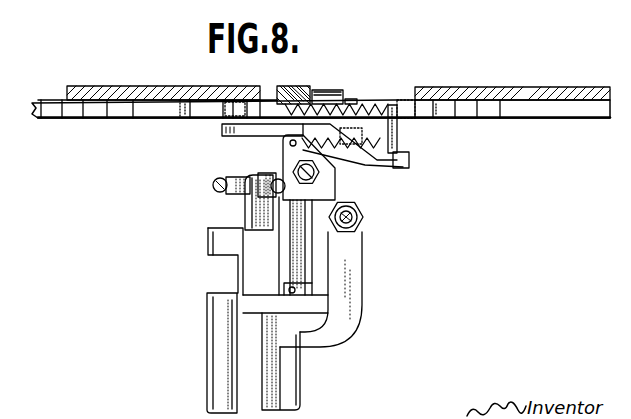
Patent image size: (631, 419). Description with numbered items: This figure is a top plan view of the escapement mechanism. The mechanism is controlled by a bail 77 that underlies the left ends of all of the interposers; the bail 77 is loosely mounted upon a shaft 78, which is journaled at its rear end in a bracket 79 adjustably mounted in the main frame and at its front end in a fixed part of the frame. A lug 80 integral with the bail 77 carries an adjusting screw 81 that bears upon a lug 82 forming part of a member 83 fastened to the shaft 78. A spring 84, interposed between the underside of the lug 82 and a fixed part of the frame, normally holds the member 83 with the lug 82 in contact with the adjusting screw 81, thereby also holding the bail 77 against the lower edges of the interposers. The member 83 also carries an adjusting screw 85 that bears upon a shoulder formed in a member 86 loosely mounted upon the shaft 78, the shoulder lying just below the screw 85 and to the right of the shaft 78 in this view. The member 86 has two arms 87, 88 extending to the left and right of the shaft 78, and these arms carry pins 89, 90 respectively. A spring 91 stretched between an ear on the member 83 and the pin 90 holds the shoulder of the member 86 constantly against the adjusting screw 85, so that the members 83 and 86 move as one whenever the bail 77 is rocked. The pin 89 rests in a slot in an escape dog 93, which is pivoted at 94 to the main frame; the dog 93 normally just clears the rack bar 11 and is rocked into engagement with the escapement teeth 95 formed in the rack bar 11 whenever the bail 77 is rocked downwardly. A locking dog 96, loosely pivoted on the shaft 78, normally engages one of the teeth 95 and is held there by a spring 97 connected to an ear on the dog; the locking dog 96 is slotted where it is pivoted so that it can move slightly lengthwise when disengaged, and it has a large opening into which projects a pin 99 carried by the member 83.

The rack bar 11 is at (321, 105).
The bail 77 is at (222, 372).
The shaft 78 is at (295, 373).
The bracket 79 is at (310, 88).
The lug 80 is at (258, 213).
The adjusting screw 81 is at (263, 176).
The lug 82 is at (215, 190).
The member 83 is at (305, 212).
The spring 84 is at (212, 177).
The adjusting screw 85 is at (320, 172).
The member 86 is at (282, 147).
The arm 87 is at (222, 130).
The arm 88 is at (410, 160).
The pin 89 is at (233, 112).
The pin 90 is at (398, 104).
The spring 91 is at (398, 136).
The escape dog 93 is at (190, 112).
The pivot 94 is at (154, 98).
The escapement teeth 95 is at (465, 110).
The locking dog 96 is at (410, 100).
The spring 97 is at (376, 110).
The pin 99 is at (354, 101).